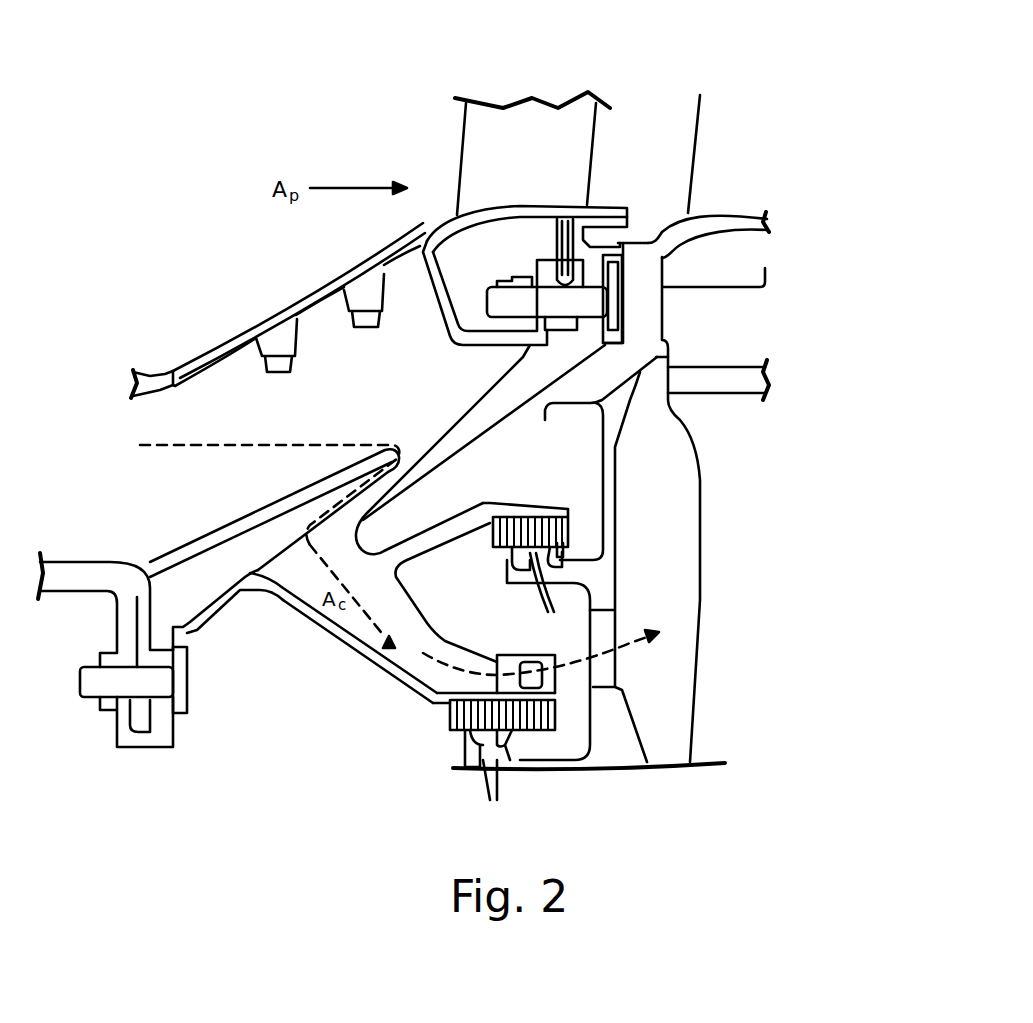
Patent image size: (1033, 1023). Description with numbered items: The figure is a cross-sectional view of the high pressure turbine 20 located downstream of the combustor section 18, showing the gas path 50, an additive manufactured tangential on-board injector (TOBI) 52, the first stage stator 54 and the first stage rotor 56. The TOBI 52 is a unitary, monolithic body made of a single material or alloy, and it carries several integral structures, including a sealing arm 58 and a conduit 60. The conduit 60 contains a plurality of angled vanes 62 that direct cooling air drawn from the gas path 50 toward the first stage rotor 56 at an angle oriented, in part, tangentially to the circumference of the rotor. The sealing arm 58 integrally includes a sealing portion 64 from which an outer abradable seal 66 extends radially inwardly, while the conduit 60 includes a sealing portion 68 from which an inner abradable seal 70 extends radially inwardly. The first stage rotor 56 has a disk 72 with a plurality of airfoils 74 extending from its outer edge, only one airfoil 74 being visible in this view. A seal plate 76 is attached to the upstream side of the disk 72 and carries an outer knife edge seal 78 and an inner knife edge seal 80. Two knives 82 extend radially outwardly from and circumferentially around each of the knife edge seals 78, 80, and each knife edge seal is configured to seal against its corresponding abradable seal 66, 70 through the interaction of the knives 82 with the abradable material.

The combustor section 18 is at (211, 287).
The high pressure turbine 20 is at (836, 129).
The gas path 50 is at (265, 440).
The tangential on-board injector 52 is at (320, 640).
The first stage stator 54 is at (525, 97).
The first stage rotor 56 is at (686, 786).
The sealing arm 58 is at (419, 530).
The conduit 60 is at (383, 665).
The angled vanes 62 is at (412, 615).
The sealing portion 64 is at (522, 506).
The outer abradable seal 66 is at (566, 532).
The sealing portion 68 is at (433, 707).
The inner abradable seal 70 is at (556, 716).
The disk 72 is at (697, 560).
The airfoils 74 is at (693, 158).
The seal plate 76 is at (616, 598).
The outer knife edge seal 78 is at (497, 567).
The inner knife edge seal 80 is at (448, 751).
The knives 82 is at (518, 691).